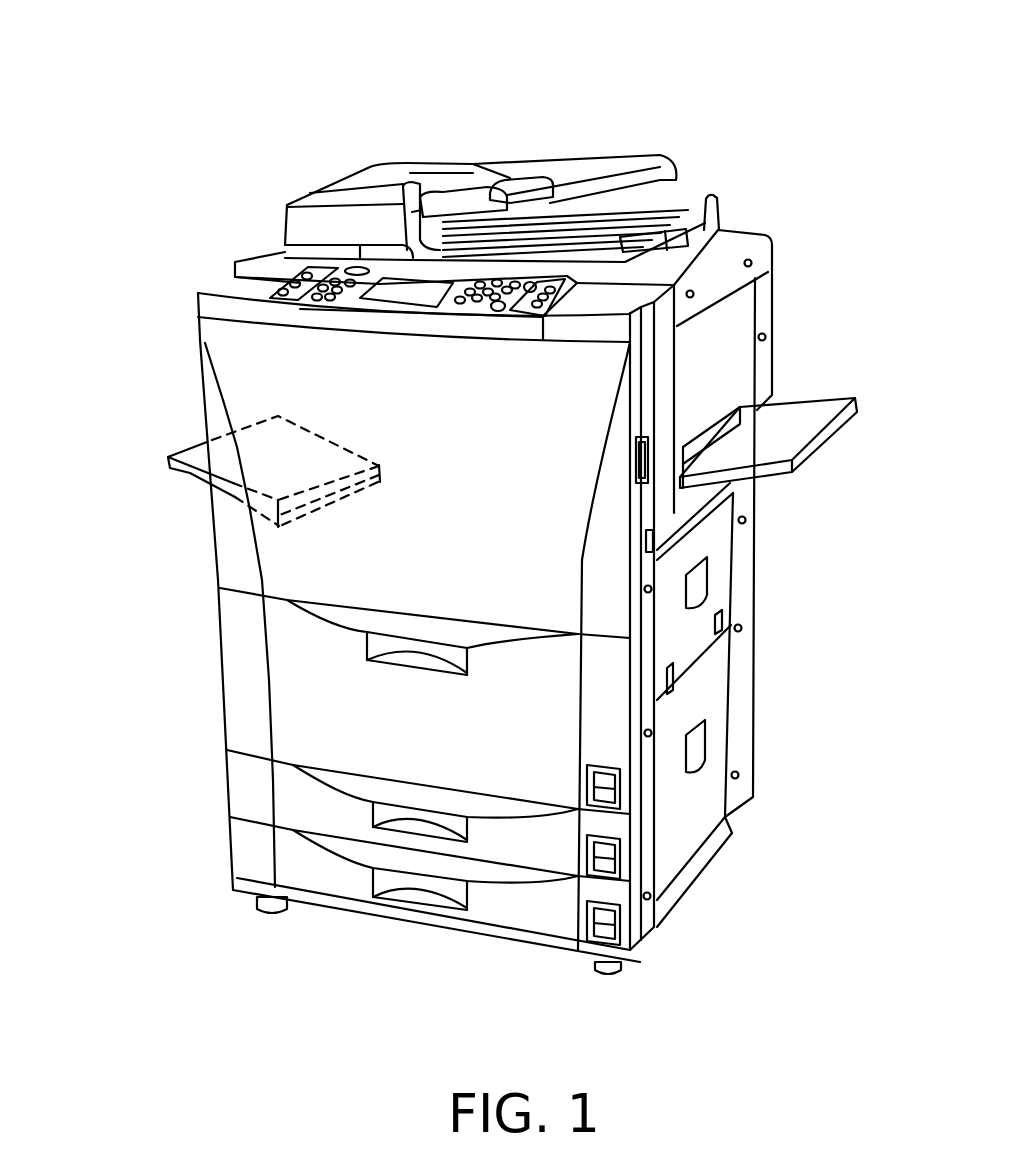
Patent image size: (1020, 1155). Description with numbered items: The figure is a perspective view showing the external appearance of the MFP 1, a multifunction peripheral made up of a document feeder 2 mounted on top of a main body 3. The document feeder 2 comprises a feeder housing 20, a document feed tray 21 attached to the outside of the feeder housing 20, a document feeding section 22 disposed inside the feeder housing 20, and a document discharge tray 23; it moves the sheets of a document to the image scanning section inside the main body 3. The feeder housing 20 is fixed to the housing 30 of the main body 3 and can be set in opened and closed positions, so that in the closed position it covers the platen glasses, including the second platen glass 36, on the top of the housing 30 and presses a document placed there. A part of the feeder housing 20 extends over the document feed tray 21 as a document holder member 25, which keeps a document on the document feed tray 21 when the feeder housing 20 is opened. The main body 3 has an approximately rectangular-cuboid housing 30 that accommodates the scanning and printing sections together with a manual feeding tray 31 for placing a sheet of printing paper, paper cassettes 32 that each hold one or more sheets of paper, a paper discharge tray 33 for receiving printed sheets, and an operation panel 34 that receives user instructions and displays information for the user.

The MFP 1 is at (152, 68).
The document feeder 2 is at (232, 178).
The main body 3 is at (111, 326).
The feeder housing 20 is at (407, 165).
The document feed tray 21 is at (527, 200).
The document feeding section 22 is at (370, 181).
The document discharge tray 23 is at (617, 237).
The document holder member 25 is at (480, 170).
The housing 30 is at (202, 395).
The manual feeding tray 31 is at (822, 402).
The paper cassettes 32 is at (250, 797).
The paper discharge tray 33 is at (176, 455).
The operation panel 34 is at (315, 294).
The second platen glass 36 is at (298, 246).